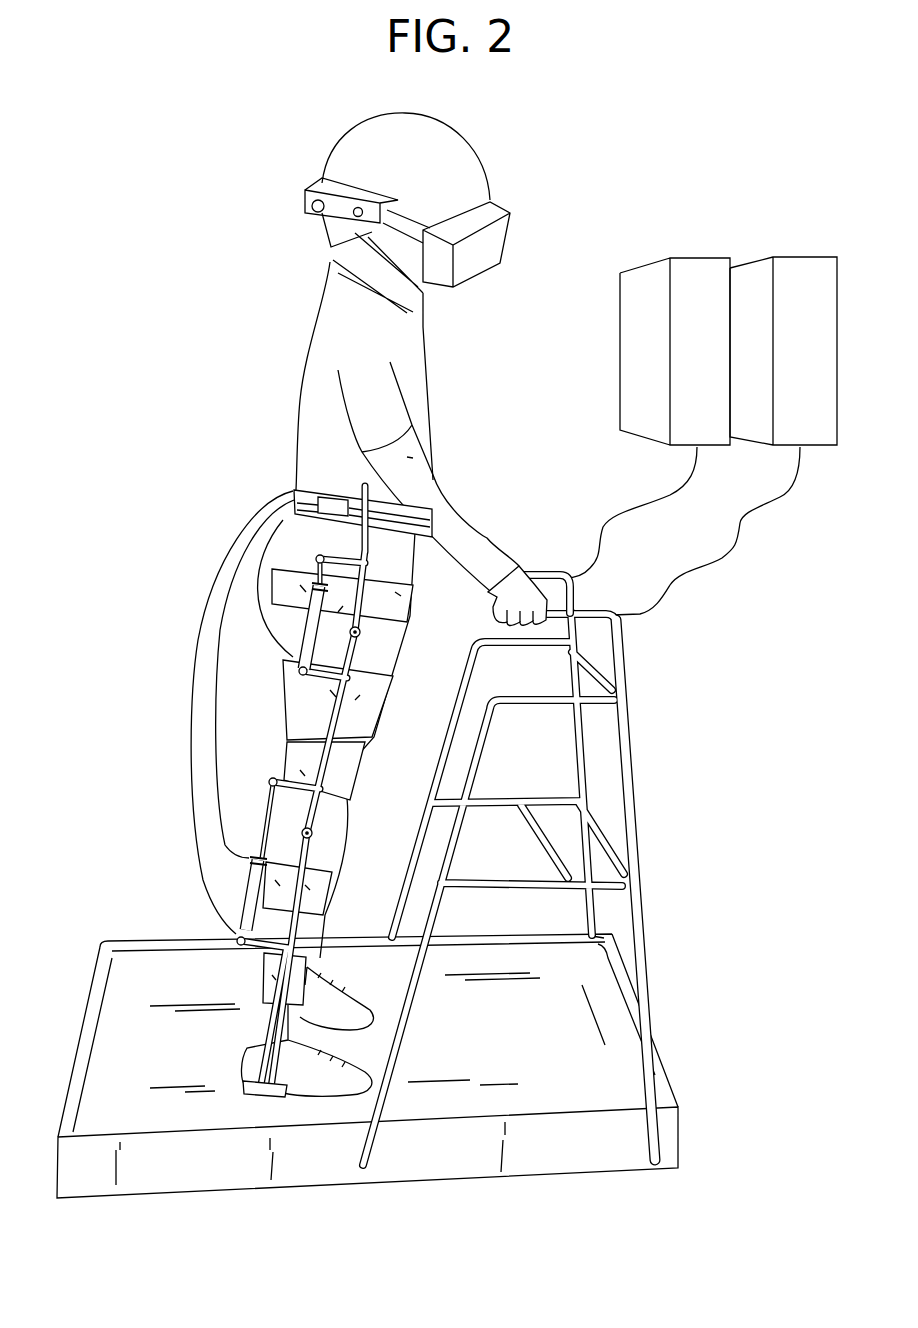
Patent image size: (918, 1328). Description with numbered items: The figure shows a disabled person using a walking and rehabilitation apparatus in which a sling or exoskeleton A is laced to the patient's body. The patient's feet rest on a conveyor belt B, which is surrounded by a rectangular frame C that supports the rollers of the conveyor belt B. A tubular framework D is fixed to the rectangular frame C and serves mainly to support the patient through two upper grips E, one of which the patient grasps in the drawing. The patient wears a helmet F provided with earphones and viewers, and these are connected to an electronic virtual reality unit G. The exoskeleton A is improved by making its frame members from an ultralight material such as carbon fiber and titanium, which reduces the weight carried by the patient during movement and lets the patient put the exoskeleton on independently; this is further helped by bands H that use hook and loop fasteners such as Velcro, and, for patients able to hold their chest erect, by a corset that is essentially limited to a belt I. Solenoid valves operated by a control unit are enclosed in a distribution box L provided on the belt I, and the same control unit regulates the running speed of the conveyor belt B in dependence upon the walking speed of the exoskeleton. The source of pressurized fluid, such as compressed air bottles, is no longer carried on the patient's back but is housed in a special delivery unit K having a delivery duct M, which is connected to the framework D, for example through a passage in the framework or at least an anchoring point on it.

The sling or exoskeleton A is at (267, 705).
The conveyor belt B is at (147, 923).
The rectangular frame C is at (673, 1078).
The tubular framework D is at (640, 830).
The upper grips E is at (545, 566).
The helmet F is at (330, 157).
The electronic virtual reality unit G is at (683, 257).
The bands H is at (410, 607).
The belt I is at (292, 488).
The delivery unit K is at (793, 257).
The distribution box L is at (330, 494).
The delivery duct M is at (717, 567).